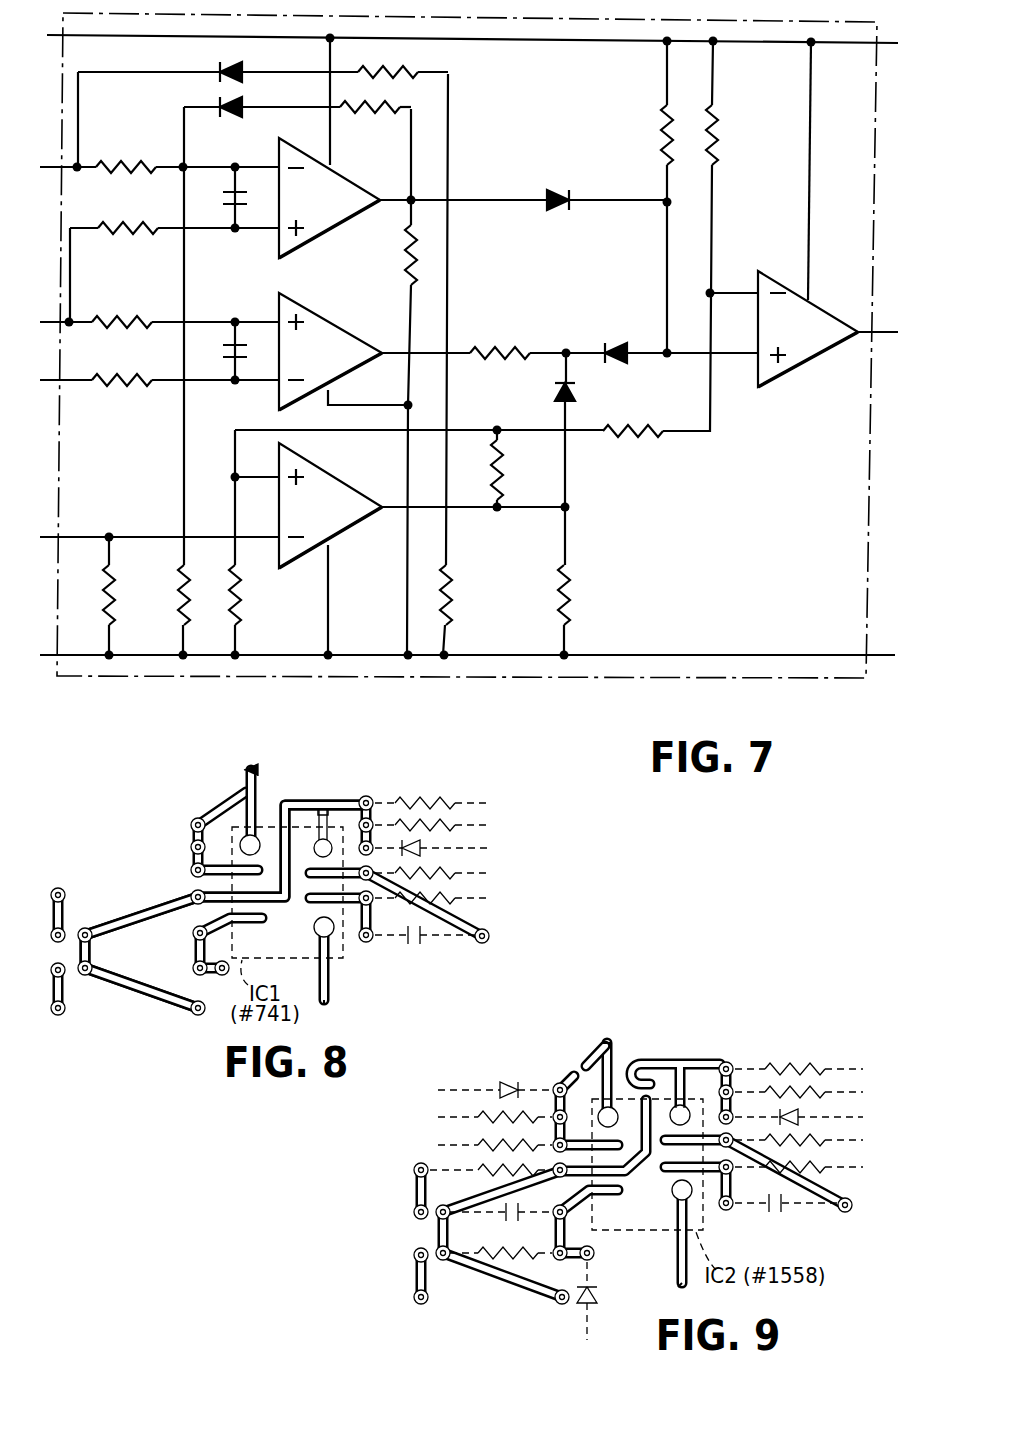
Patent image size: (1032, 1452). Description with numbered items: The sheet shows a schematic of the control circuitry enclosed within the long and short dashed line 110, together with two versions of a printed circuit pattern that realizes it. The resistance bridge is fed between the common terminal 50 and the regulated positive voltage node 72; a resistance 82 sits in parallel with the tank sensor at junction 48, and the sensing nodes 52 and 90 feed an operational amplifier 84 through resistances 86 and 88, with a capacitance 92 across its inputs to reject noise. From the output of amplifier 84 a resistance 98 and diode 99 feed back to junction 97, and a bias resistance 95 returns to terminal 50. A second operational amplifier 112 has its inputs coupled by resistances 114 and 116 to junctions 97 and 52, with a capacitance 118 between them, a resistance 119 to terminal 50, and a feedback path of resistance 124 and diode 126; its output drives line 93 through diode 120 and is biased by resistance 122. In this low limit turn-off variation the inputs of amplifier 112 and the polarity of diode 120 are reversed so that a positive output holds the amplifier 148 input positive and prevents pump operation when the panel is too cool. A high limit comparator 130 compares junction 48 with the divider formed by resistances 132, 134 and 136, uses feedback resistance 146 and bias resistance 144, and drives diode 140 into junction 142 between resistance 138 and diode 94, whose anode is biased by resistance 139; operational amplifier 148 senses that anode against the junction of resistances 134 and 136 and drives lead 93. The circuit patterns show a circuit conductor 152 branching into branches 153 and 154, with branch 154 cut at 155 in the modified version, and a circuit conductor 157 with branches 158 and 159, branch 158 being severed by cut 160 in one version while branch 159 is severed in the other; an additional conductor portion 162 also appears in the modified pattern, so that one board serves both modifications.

In FIG. 7, the junction 48 is at (76, 532).
In FIG. 7, the common terminal 50 is at (684, 654).
In FIG. 8, the common terminal 50 is at (328, 1002).
In FIG. 9, the common terminal 50 is at (674, 1260).
In FIG. 7, the sensing node 52 is at (90, 320).
In FIG. 7, the regulated positive voltage node 72 is at (512, 43).
In FIG. 8, the regulated positive voltage node 72 is at (250, 769).
In FIG. 9, the regulated positive voltage node 72 is at (609, 1057).
In FIG. 7, the resistance 82 is at (114, 604).
In FIG. 7, the operational amplifier 84 is at (345, 334).
In FIG. 7, the resistance 86 is at (138, 319).
In FIG. 8, the resistance 86 is at (463, 898).
In FIG. 9, the resistance 86 is at (828, 1151).
In FIG. 7, the resistance 88 is at (131, 378).
In FIG. 8, the resistance 88 is at (467, 873).
In FIG. 9, the resistance 88 is at (828, 1121).
In FIG. 7, the sensing node 90 is at (69, 378).
In FIG. 7, the capacitance 92 is at (232, 354).
In FIG. 8, the capacitance 92 is at (410, 943).
In FIG. 9, the capacitance 92 is at (776, 1213).
In FIG. 7, the line 93 is at (859, 338).
In FIG. 7, the diode 94 is at (616, 344).
In FIG. 8, the diode 94 is at (463, 848).
In FIG. 9, the diode 94 is at (828, 1093).
In FIG. 7, the bias resistance 95 is at (456, 606).
In FIG. 8, the bias resistance 95 is at (403, 802).
In FIG. 9, the bias resistance 95 is at (810, 1068).
In FIG. 7, the junction 97 is at (82, 163).
In FIG. 7, the resistance 98 is at (417, 72).
In FIG. 8, the resistance 98 is at (457, 825).
In FIG. 9, the resistance 98 is at (828, 1072).
In FIG. 7, the diode 99 is at (240, 71).
In FIG. 7, the long and short dashed line 110 is at (696, 679).
In FIG. 7, the operational amplifier 112 is at (350, 179).
In FIG. 7, the resistance 114 is at (116, 160).
In FIG. 9, the resistance 114 is at (502, 1260).
In FIG. 7, the resistance 116 is at (118, 233).
In FIG. 9, the resistance 116 is at (474, 1172).
In FIG. 7, the capacitance 118 is at (227, 204).
In FIG. 9, the capacitance 118 is at (508, 1222).
In FIG. 7, the resistance 119 is at (184, 578).
In FIG. 7, the diode 120 is at (562, 189).
In FIG. 9, the diode 120 is at (498, 1086).
In FIG. 7, the bias resistance 122 is at (403, 253).
In FIG. 9, the bias resistance 122 is at (440, 1114).
In FIG. 7, the resistance 124 is at (378, 116).
In FIG. 9, the resistance 124 is at (440, 1144).
In FIG. 7, the diode 126 is at (245, 114).
In FIG. 9, the diode 126 is at (590, 1305).
In FIG. 7, the operational amplifier 130 is at (341, 489).
In FIG. 7, the resistance 132 is at (244, 608).
In FIG. 7, the resistance 134 is at (611, 440).
In FIG. 7, the resistance 136 is at (721, 160).
In FIG. 7, the resistance 138 is at (521, 344).
In FIG. 7, the bias resistance 139 is at (660, 114).
In FIG. 7, the diode 140 is at (581, 392).
In FIG. 7, the junction 142 is at (558, 348).
In FIG. 7, the bias resistance 144 is at (580, 594).
In FIG. 7, the resistance 146 is at (506, 454).
In FIG. 7, the operational amplifier 148 is at (827, 310).
In FIG. 8, the circuit conductor 152 is at (244, 782).
In FIG. 9, the circuit conductor 152 is at (610, 1049).
In FIG. 8, the branch 153 is at (264, 800).
In FIG. 9, the branch 153 is at (592, 1034).
In FIG. 8, the branch 154 is at (212, 812).
In FIG. 9, the branch 154 is at (572, 1073).
In FIG. 9, the cut 155 is at (576, 1062).
In FIG. 8, the circuit conductor 157 is at (367, 798).
In FIG. 9, the circuit conductor 157 is at (716, 1064).
In FIG. 8, the branch 158 is at (321, 836).
In FIG. 9, the branch 158 is at (678, 1092).
In FIG. 8, the branch 159 is at (264, 916).
In FIG. 9, the branch 159 is at (628, 1164).
In FIG. 8, the cut 160 is at (328, 812).
In FIG. 9, the conductor strip 162 is at (637, 1062).